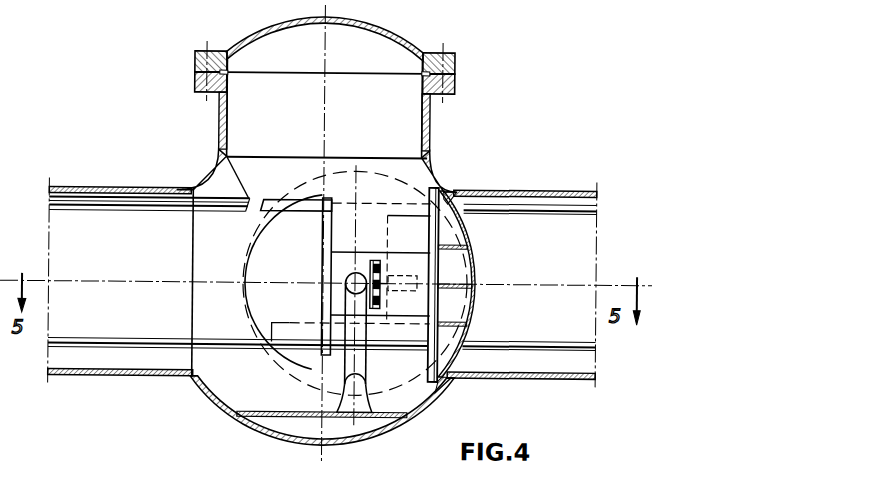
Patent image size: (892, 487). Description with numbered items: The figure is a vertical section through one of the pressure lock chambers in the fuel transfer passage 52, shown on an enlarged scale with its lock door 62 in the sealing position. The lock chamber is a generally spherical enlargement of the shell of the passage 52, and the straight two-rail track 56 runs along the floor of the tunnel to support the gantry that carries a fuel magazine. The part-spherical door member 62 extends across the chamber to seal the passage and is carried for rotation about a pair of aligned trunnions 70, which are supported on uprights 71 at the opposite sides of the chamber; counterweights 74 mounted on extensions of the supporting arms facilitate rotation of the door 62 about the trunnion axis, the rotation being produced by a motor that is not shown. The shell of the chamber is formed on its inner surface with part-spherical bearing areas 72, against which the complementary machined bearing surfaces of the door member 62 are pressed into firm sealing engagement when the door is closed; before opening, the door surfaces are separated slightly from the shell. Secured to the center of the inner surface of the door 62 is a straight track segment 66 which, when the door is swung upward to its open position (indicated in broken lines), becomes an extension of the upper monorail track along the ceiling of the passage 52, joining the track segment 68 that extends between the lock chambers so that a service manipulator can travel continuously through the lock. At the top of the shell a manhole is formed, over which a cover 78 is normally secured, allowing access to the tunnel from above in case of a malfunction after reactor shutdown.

The passage 52 is at (137, 260).
The two-rail track 56 is at (128, 342).
The lock door 62 is at (470, 234).
The track segment 66 is at (435, 304).
The track segment 68 is at (152, 208).
The trunnions 70 is at (358, 273).
The uprights 71 is at (358, 352).
The bearing areas 72 is at (449, 184).
The counterweights 74 is at (298, 265).
The cover 78 is at (430, 61).